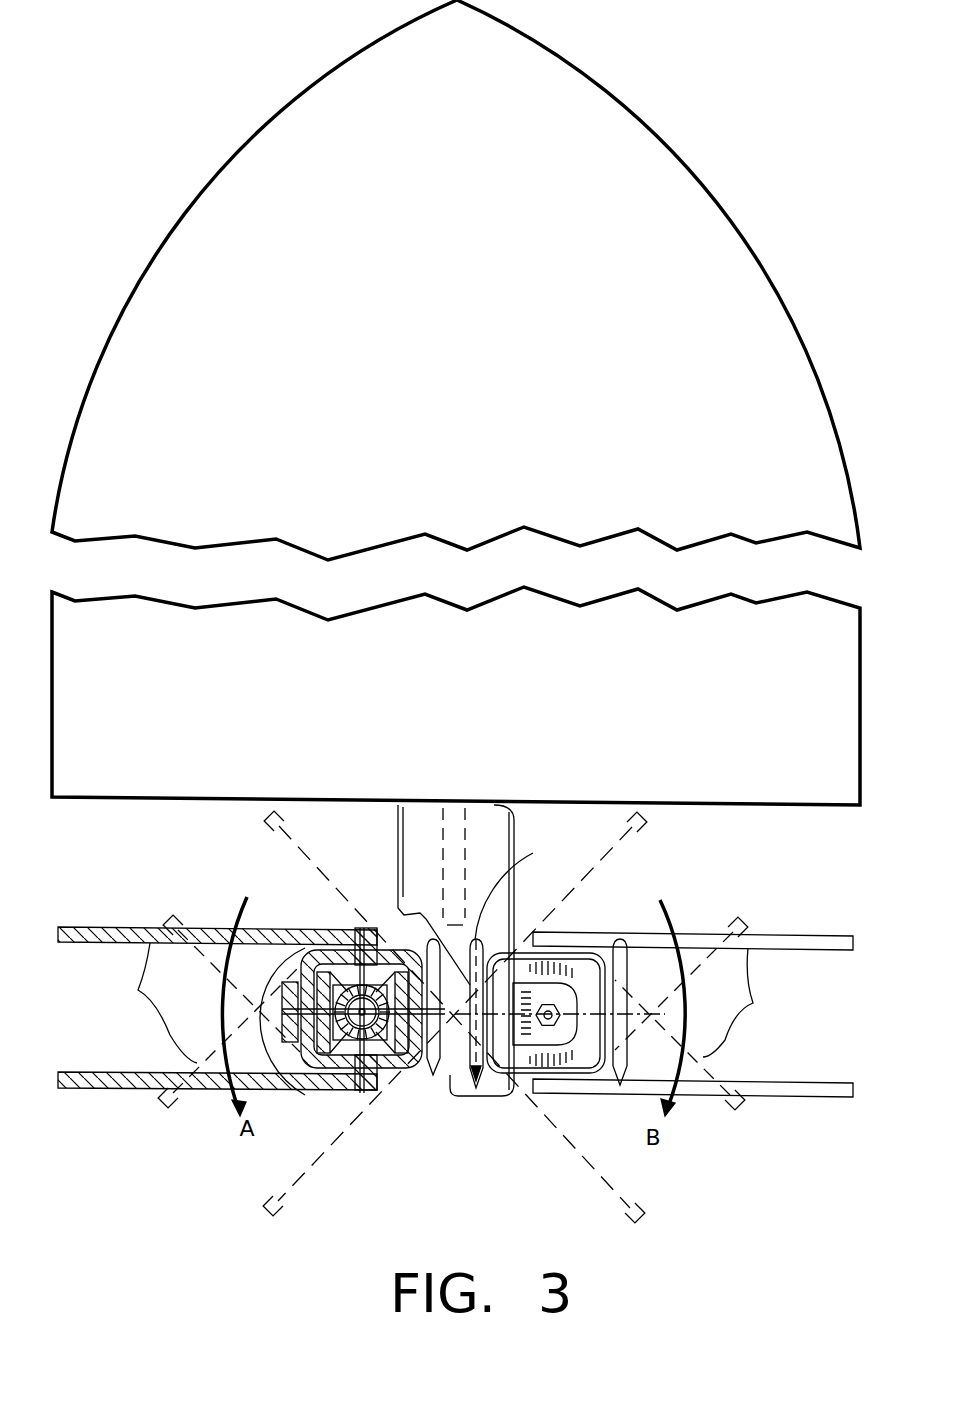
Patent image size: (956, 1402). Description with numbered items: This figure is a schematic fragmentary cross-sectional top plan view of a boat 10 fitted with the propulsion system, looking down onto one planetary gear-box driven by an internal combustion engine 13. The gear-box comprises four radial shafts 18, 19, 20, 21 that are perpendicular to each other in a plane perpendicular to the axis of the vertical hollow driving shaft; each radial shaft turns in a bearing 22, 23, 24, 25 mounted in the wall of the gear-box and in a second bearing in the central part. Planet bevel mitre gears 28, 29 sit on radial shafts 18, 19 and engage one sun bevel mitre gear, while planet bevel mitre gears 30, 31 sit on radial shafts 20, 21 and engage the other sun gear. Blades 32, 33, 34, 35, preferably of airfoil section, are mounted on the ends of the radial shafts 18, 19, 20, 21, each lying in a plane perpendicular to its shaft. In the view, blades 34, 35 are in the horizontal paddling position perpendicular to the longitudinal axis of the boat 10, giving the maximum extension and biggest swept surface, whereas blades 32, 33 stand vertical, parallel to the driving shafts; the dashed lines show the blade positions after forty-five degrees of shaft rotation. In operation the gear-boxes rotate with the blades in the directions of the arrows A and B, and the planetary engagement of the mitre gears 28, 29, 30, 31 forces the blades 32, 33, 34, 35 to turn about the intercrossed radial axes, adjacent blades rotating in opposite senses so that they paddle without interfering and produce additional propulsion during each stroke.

The boat 10 is at (753, 805).
The internal combustion engine 13 is at (425, 821).
The radial shaft 18 is at (238, 1090).
The radial shaft 19 is at (443, 1087).
The radial shaft 20 is at (365, 1095).
The radial shaft 21 is at (353, 930).
The bearing 22 is at (300, 1068).
The bearing 23 is at (410, 1080).
The bearing 24 is at (397, 1080).
The bearing 25 is at (320, 935).
The planet bevel mitre gear 28 is at (300, 968).
The planet bevel mitre gear 29 is at (387, 1080).
The planet bevel mitre gear 30 is at (322, 1077).
The planet bevel mitre gear 31 is at (228, 958).
The blade 32 is at (250, 1010).
The blade 33 is at (387, 917).
The blade 34 is at (120, 1094).
The blade 35 is at (443, 1003).